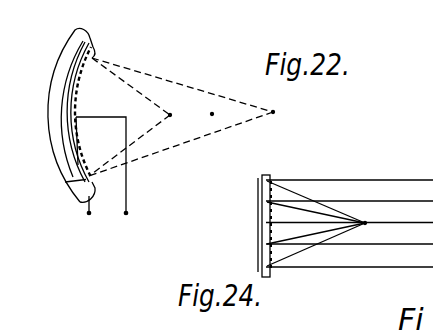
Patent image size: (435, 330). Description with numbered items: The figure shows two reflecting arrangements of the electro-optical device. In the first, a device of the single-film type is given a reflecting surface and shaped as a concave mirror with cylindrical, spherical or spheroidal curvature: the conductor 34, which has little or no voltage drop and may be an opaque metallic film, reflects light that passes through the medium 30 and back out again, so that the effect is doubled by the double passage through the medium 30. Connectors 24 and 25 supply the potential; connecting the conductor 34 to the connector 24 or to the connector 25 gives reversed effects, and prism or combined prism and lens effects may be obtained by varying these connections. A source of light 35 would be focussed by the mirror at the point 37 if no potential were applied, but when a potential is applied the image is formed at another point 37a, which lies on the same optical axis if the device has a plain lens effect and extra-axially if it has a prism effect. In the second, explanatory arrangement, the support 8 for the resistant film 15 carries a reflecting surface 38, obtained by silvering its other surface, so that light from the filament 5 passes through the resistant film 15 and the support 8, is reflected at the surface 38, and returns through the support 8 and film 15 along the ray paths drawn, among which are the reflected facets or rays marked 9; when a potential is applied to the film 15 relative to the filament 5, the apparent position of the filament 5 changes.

In FIG. 24, the filament 5 is at (366, 222).
In FIG. 24, the support 8 is at (266, 175).
In FIG. 24, the reflecting facets 9 is at (271, 181).
In FIG. 24, the resistant film 15 is at (303, 180).
In FIG. 22, the connector 24 is at (77, 117).
In FIG. 22, the connector 25 is at (94, 57).
In FIG. 22, the medium 30 is at (90, 43).
In FIG. 22, the conductor 34 is at (64, 98).
In FIG. 22, the source of light 35 is at (171, 114).
In FIG. 22, the image point 37 is at (212, 114).
In FIG. 22, the image point 37a is at (274, 112).
In FIG. 24, the reflecting surface 38 is at (260, 238).